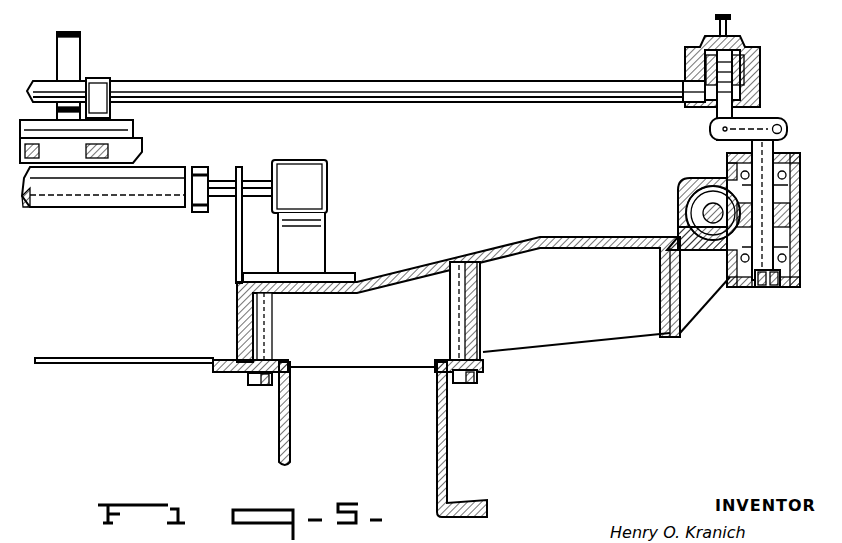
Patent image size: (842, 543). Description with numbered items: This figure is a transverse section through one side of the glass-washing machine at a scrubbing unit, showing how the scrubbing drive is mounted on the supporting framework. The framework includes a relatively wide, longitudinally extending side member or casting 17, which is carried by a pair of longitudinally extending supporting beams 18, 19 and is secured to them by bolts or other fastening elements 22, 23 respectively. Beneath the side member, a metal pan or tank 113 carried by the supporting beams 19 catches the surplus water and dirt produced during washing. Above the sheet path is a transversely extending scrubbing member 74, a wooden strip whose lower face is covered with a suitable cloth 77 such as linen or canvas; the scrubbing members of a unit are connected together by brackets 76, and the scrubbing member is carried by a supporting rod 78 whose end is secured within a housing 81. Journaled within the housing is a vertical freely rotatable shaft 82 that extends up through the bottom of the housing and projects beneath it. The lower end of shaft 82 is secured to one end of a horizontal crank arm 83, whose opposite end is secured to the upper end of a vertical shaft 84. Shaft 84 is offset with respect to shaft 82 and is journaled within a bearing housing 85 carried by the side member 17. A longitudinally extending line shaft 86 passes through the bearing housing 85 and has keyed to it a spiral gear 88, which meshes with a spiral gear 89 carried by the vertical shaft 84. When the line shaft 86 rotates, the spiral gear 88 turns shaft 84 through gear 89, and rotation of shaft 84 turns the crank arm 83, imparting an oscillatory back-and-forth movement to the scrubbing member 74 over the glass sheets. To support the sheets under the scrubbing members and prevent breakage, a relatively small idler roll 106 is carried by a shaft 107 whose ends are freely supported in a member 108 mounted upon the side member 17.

The side member 17 is at (498, 250).
The supporting beam 18 is at (449, 437).
The supporting beam 19 is at (291, 398).
The fastening element 22 is at (480, 380).
The fastening element 23 is at (248, 382).
The scrubbing member 74 is at (132, 132).
The bracket 76 is at (68, 32).
The cloth 77 is at (60, 152).
The supporting rod 78 is at (523, 81).
The housing 81 is at (690, 63).
The vertical shaft 82 is at (716, 104).
The crank arm 83 is at (740, 127).
The vertical shaft 84 is at (752, 157).
The bearing housing 85 is at (728, 288).
The line shaft 86 is at (690, 252).
The spiral gear 88 is at (690, 210).
The spiral gear 89 is at (768, 287).
The idler roll 106 is at (149, 197).
The shaft 107 is at (249, 186).
The member 108 is at (318, 228).
The metal pan or tank 113 is at (140, 358).